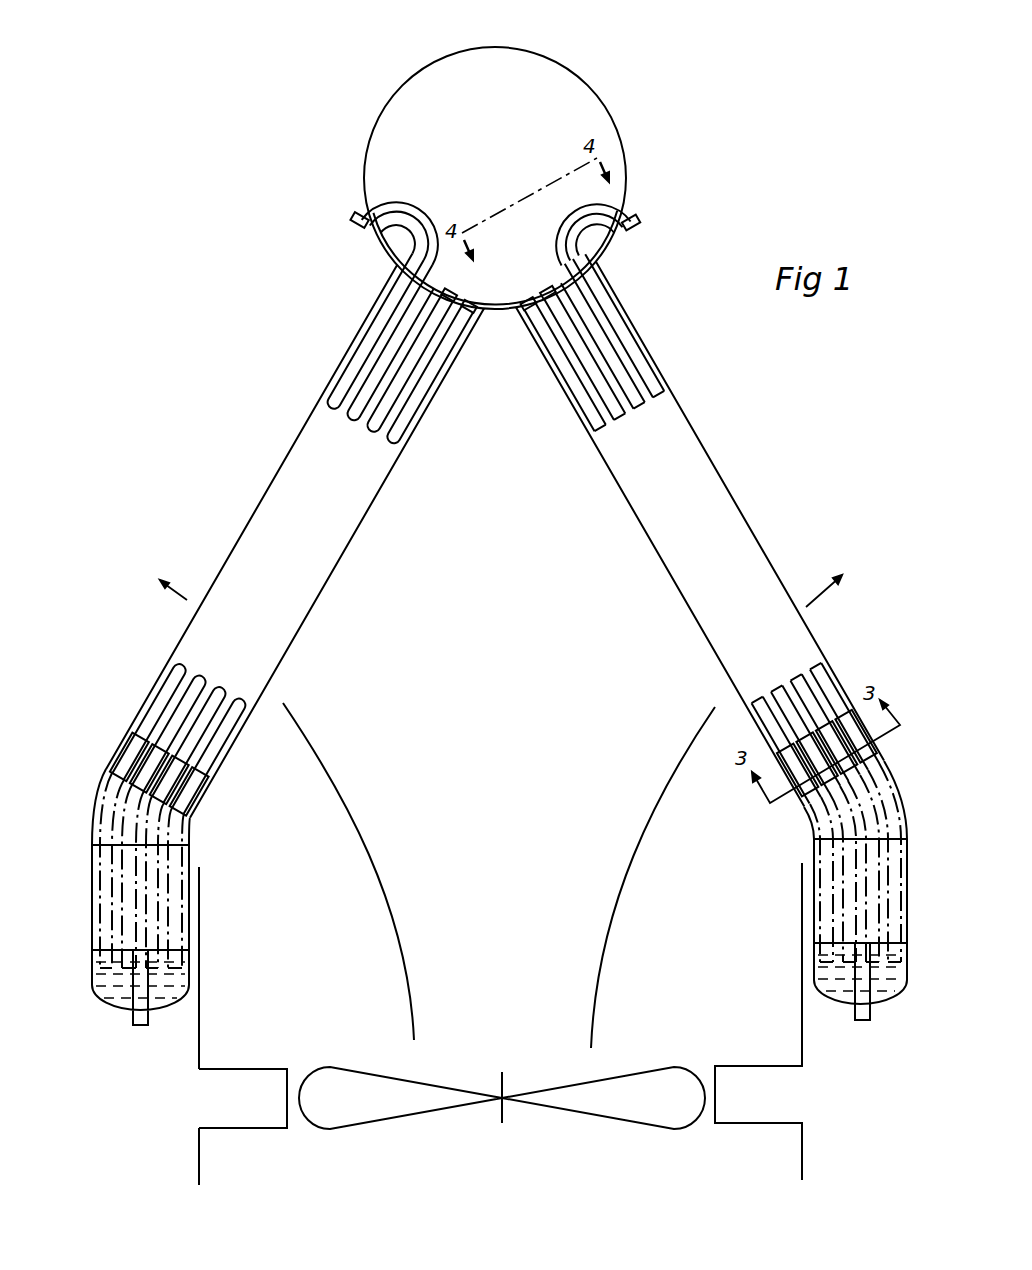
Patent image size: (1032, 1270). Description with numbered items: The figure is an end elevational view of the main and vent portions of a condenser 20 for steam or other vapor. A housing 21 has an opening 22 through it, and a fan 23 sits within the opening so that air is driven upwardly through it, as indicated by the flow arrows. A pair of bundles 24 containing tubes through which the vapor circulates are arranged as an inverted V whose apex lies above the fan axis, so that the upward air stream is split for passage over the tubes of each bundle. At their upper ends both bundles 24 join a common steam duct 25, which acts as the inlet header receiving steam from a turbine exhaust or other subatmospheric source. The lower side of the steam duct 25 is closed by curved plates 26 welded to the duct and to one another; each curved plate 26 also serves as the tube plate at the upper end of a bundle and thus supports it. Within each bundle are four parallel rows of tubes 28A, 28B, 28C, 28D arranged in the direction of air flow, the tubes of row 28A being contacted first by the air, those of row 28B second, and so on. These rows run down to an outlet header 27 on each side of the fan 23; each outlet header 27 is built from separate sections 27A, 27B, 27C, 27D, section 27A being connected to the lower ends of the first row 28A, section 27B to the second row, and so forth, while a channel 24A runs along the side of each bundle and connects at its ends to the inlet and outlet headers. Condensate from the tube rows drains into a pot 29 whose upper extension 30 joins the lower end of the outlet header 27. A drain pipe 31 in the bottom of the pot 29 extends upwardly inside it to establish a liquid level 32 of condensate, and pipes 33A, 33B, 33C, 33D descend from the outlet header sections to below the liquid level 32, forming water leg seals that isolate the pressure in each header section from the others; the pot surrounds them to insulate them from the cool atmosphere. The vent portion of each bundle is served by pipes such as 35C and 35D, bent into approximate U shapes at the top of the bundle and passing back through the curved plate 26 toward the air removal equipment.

The condenser 20 is at (268, 428).
The housing 21 is at (204, 998).
The opening 22 is at (290, 1128).
The fan 23 is at (389, 1115).
The bundle 24 is at (245, 530).
The channel 24A is at (265, 648).
The steam duct 25 is at (545, 57).
The curved plate 26 is at (604, 252).
The outlet header 27 is at (795, 800).
The outlet header section 27A is at (196, 793).
The outlet header section 27B is at (180, 766).
The outlet header section 27C is at (156, 766).
The outlet header section 27D is at (126, 769).
The first row of tubes 28A is at (770, 722).
The second row of tubes 28B is at (778, 692).
The third row of tubes 28C is at (802, 680).
The fourth row of tubes 28D is at (818, 670).
The pot 29 is at (909, 860).
The upper extension 30 is at (906, 820).
The drain pipe 31 is at (870, 1015).
The liquid level 32 is at (893, 945).
The pipe 33A is at (826, 851).
The pipe 33B is at (853, 888).
The pipe 33C is at (872, 797).
The pipe 33D is at (896, 813).
The pipe 35C is at (433, 170).
The pipe 35D is at (400, 233).